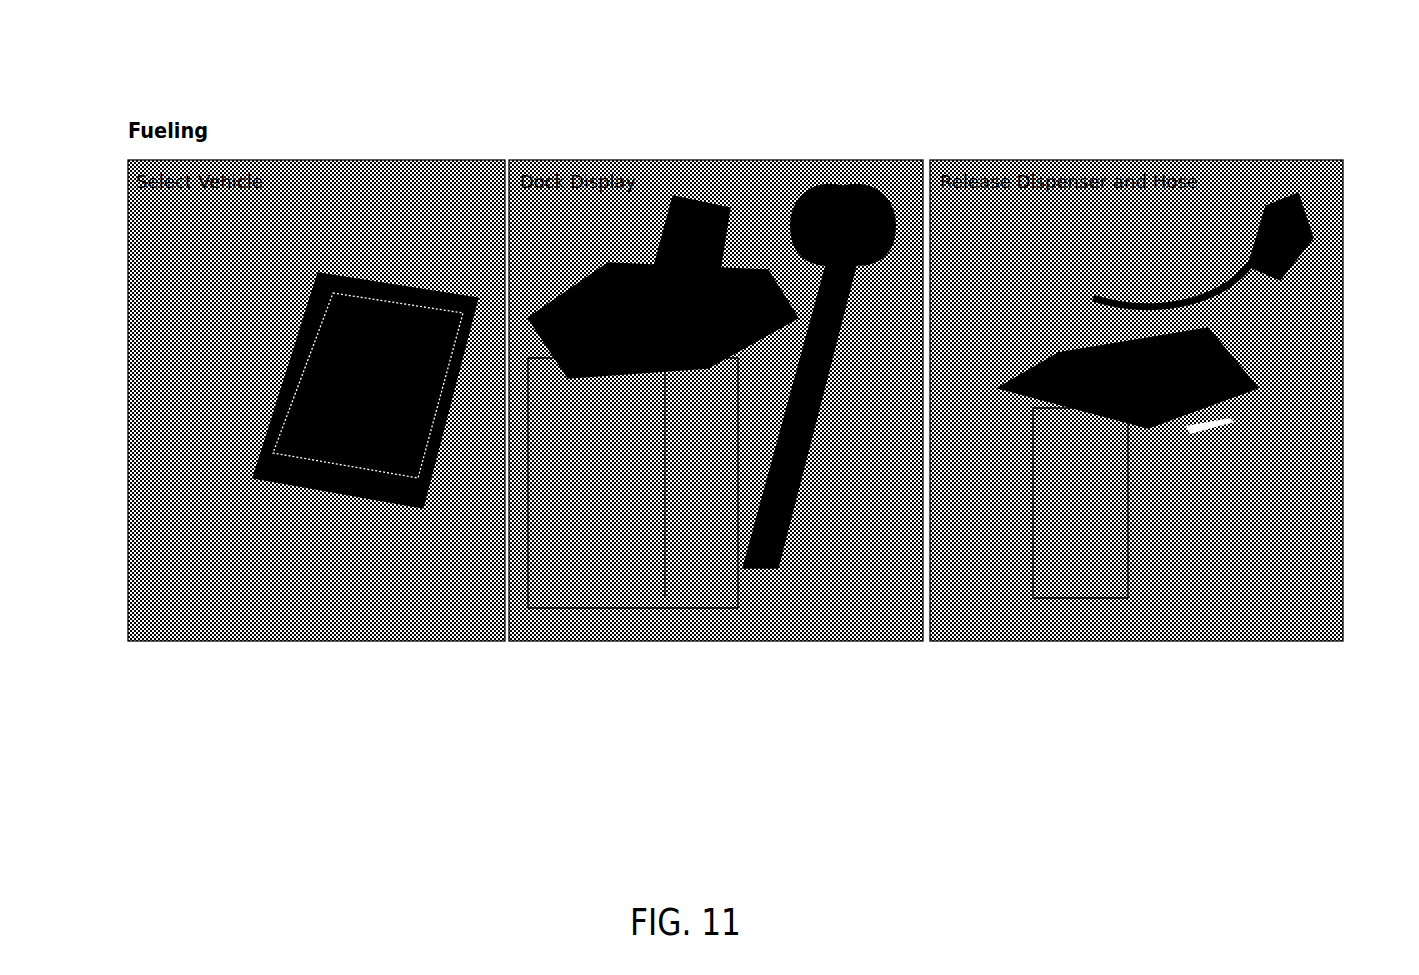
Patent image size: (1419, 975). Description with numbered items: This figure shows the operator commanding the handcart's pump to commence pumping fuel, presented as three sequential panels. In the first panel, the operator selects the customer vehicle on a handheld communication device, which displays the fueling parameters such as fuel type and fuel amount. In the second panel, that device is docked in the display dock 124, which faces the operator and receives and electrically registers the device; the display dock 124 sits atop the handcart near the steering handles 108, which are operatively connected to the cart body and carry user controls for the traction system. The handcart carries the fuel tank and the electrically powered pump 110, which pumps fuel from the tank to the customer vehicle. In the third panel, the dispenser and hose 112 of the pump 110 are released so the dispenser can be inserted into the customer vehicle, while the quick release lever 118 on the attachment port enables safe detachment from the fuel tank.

The display dock 124 is at (712, 268).
The steering handles 108 is at (863, 172).
The hose 112 is at (1213, 287).
The pump 110 is at (1153, 348).
The quick release lever 118 is at (1235, 421).